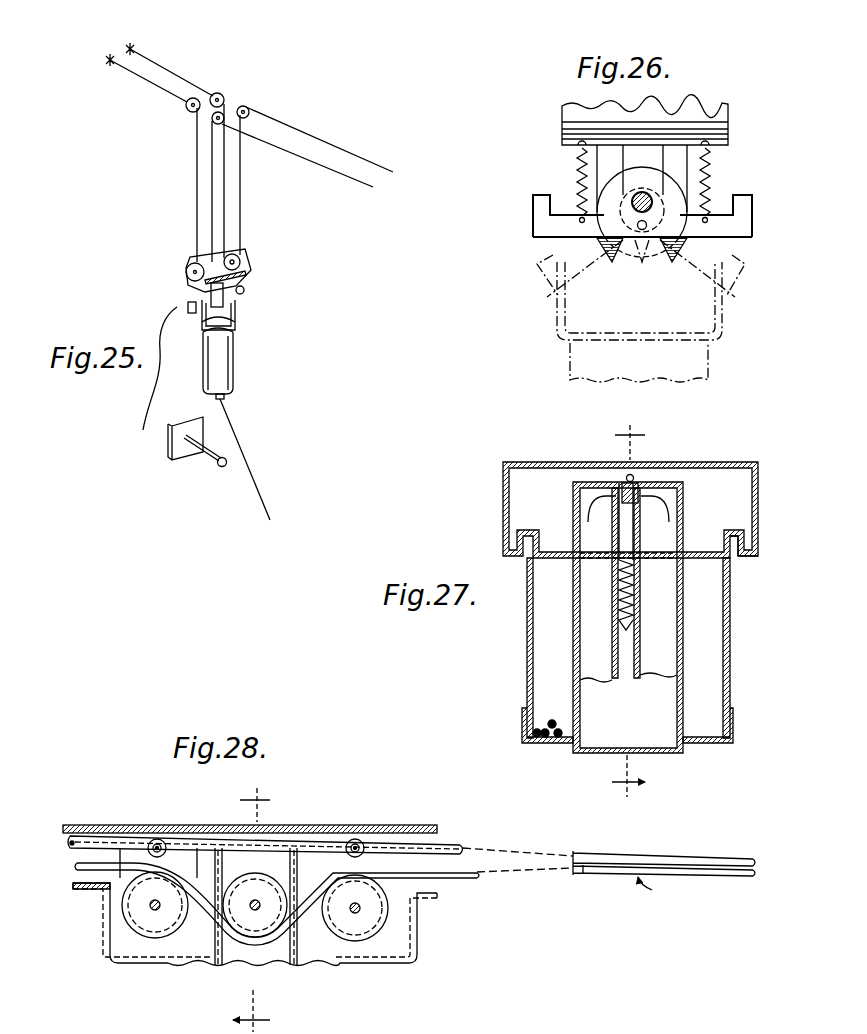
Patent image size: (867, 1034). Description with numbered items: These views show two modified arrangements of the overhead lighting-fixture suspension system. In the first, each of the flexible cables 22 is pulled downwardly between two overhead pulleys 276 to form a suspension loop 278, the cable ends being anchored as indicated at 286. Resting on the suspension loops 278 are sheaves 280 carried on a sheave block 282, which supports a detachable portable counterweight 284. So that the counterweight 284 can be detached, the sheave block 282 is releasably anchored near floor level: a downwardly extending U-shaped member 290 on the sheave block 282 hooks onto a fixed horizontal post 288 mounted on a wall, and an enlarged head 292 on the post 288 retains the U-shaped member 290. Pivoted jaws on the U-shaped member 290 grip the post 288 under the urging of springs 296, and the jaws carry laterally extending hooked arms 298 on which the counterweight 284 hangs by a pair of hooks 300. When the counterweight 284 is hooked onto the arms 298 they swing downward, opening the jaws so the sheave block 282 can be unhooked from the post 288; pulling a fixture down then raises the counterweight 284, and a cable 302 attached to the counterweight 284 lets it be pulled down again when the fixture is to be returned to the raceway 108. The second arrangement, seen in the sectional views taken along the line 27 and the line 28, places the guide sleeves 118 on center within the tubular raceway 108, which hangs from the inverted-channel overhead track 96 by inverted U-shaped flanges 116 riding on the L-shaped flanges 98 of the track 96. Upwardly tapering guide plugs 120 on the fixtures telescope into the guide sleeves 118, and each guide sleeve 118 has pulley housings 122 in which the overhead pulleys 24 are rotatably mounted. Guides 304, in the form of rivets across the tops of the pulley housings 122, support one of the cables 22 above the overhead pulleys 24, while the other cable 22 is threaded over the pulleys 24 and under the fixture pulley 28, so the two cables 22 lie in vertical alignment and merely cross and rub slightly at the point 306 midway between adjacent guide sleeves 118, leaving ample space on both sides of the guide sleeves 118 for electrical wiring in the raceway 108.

In FIG. 25, the cables 22 is at (323, 162).
In FIG. 27, the cables 22 is at (634, 482).
In FIG. 28, the cables 22 is at (76, 865).
In FIG. 28, the overhead pulleys 24 is at (148, 937).
In FIG. 28, the section line 27— 27 is at (267, 910).
In FIG. 27, the fixture pulleys 28 is at (650, 613).
In FIG. 28, the fixture pulleys 28 is at (252, 928).
In FIG. 27, the overhead track 96 is at (759, 503).
In FIG. 27, the L-shaped flanges 98 is at (750, 560).
In FIG. 27, the tubular raceway 108 is at (731, 638).
In FIG. 27, the inverted U-shaped flanges 116 is at (740, 535).
In FIG. 28, the guide sleeves 118 is at (307, 972).
In FIG. 27, the guide plugs 120 is at (590, 513).
In FIG. 28, the guide plugs 120 is at (277, 867).
In FIG. 28, the pulley housings 122 is at (120, 877).
In FIG. 25, the overhead pulleys 276 is at (224, 96).
In FIG. 25, the suspension loop 278 is at (197, 220).
In FIG. 25, the sheaves 280 is at (222, 250).
In FIG. 25, the sheave block 282 is at (249, 276).
In FIG. 26, the sheave block 282 is at (729, 114).
In FIG. 25, the counterweight 284 is at (234, 367).
In FIG. 25, the cable anchors 286 is at (128, 49).
In FIG. 25, the horizontal post 288 is at (200, 454).
In FIG. 26, the horizontal post 288 is at (632, 198).
In FIG. 25, the U-shaped member 290 is at (235, 303).
In FIG. 26, the U-shaped member 290 is at (690, 160).
In FIG. 25, the enlarged head 292 is at (222, 467).
In FIG. 26, the springs 296 is at (580, 170).
In FIG. 25, the hooked arms 298 is at (194, 301).
In FIG. 26, the hooked arms 298 is at (533, 220).
In FIG. 25, the hooks 300 is at (236, 310).
In FIG. 26, the hooks 300 is at (566, 306).
In FIG. 25, the cable 302 is at (259, 483).
In FIG. 27, the guides 304 is at (641, 492).
In FIG. 28, the guides 304 is at (160, 840).
In FIG. 28, the cable crossing point 306 is at (657, 892).